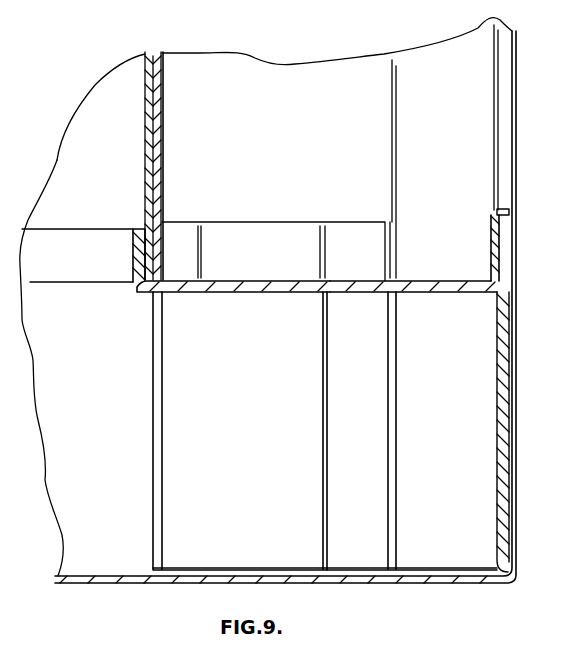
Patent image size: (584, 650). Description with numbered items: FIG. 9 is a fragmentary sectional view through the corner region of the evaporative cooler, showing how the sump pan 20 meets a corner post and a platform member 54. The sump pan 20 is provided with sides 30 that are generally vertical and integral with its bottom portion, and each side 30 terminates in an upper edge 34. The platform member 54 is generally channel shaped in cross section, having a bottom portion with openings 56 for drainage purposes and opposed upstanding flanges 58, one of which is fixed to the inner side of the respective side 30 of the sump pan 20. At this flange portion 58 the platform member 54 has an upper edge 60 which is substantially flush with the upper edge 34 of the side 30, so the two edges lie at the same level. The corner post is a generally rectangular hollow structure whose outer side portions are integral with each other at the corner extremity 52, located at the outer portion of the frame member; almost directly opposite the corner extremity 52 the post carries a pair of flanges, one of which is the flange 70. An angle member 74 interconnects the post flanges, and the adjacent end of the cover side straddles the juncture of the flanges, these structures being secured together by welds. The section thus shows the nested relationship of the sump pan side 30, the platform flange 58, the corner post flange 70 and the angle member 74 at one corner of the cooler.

The sump pan 20 is at (124, 530).
The sides 30 is at (508, 366).
The upper edges 34 is at (512, 211).
The corner extremities 52 is at (508, 480).
The platform members 54 is at (437, 293).
The openings 56 is at (273, 293).
The upstanding flanges 58 is at (133, 250).
The upper edge 60 is at (490, 214).
The flange 70 is at (164, 156).
The angle member 74 is at (143, 140).